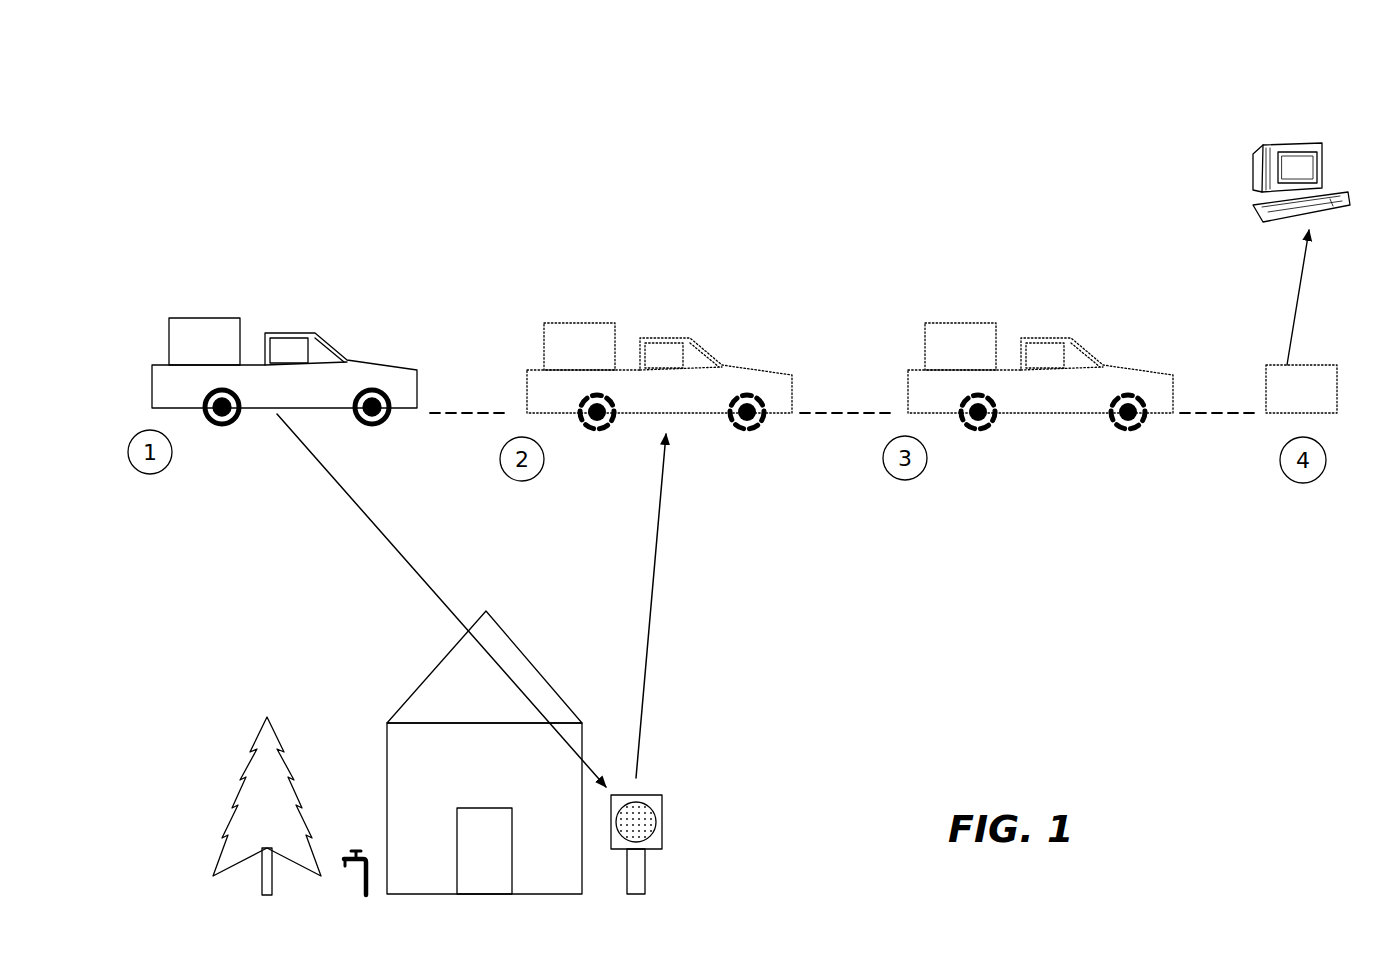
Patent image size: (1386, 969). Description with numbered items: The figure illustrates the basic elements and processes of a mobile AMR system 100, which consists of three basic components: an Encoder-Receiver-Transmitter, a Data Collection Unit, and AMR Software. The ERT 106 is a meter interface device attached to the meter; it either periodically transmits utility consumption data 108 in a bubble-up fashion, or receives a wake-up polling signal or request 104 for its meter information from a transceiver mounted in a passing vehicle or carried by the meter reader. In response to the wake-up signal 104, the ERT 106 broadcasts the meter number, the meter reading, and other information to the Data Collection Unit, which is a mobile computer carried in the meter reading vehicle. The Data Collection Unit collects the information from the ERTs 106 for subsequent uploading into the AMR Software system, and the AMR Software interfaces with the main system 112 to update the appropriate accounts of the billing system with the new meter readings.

The mobile AMR system 100 is at (328, 149).
The wake up signal 104 is at (333, 480).
The Encoder-Receiver-Transmitter (ERT) 106 is at (665, 820).
The utility consumption data 108 is at (657, 559).
The main system 112 is at (1285, 145).